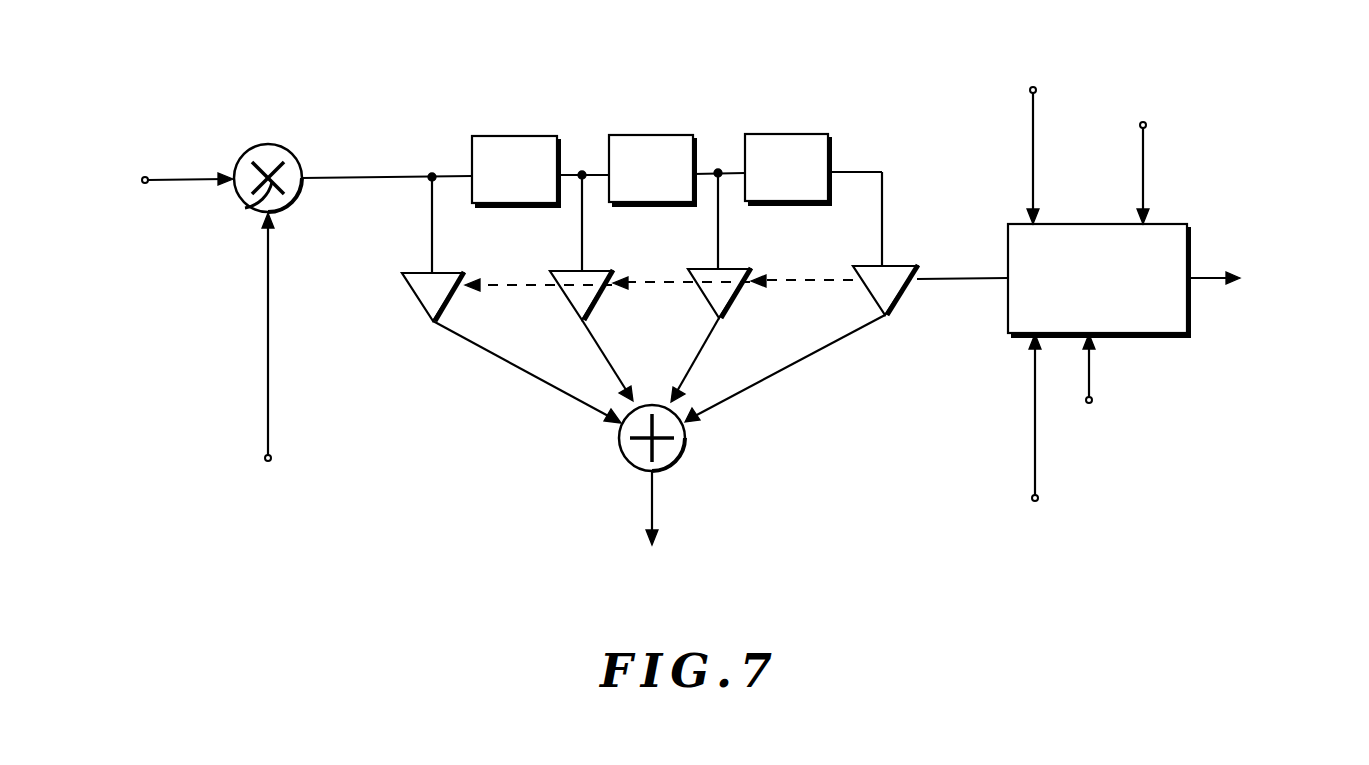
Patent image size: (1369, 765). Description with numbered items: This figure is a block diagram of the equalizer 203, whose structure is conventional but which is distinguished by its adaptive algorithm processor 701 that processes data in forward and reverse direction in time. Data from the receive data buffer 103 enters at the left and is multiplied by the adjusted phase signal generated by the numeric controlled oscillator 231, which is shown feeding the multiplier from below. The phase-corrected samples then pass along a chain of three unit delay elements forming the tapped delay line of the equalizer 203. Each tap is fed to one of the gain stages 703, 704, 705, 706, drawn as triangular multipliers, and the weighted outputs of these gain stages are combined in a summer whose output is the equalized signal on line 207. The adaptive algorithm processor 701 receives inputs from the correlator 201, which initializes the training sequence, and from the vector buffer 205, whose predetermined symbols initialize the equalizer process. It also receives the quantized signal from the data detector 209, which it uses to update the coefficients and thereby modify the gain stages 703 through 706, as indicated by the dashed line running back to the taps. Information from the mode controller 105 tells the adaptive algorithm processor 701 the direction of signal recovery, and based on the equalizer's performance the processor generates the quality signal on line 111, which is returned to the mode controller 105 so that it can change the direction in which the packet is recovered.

The receive data buffer 103 is at (135, 182).
The numeric controlled oscillator 231 is at (268, 411).
The equalizer 203 is at (542, 110).
The gain stage 703 is at (412, 290).
The gain stage 704 is at (563, 289).
The gain stage 705 is at (702, 297).
The gain stage 706 is at (857, 278).
The equalized signal line 207 is at (653, 495).
The adaptive algorithm processor 701 is at (1153, 337).
The quality signal line 111 is at (1205, 275).
The mode controller 105 is at (1175, 409).
The correlator 201 is at (1033, 114).
The vector buffer 205 is at (1143, 142).
The data detector 209 is at (1167, 395).